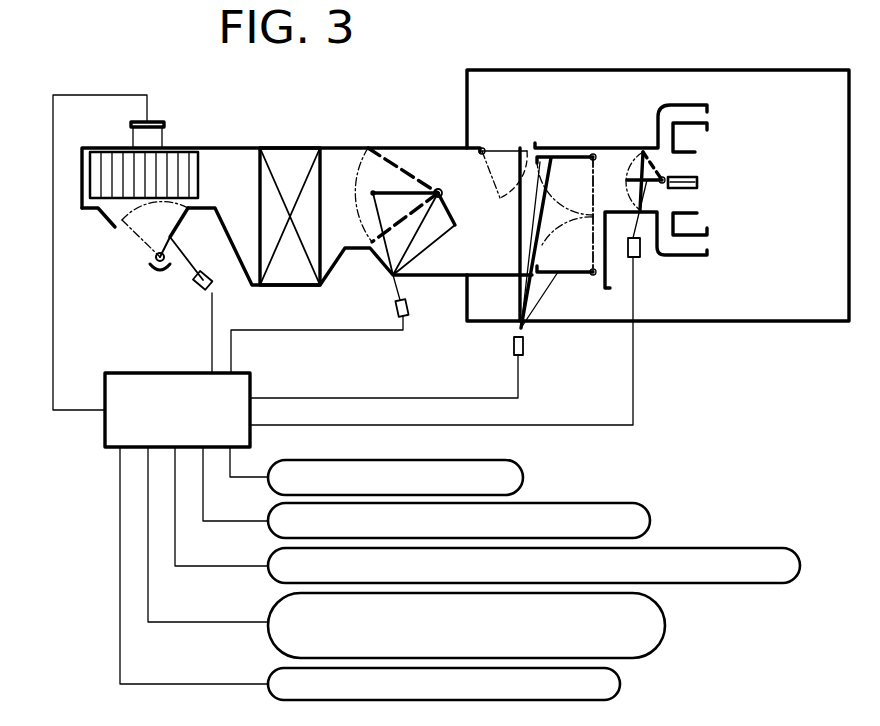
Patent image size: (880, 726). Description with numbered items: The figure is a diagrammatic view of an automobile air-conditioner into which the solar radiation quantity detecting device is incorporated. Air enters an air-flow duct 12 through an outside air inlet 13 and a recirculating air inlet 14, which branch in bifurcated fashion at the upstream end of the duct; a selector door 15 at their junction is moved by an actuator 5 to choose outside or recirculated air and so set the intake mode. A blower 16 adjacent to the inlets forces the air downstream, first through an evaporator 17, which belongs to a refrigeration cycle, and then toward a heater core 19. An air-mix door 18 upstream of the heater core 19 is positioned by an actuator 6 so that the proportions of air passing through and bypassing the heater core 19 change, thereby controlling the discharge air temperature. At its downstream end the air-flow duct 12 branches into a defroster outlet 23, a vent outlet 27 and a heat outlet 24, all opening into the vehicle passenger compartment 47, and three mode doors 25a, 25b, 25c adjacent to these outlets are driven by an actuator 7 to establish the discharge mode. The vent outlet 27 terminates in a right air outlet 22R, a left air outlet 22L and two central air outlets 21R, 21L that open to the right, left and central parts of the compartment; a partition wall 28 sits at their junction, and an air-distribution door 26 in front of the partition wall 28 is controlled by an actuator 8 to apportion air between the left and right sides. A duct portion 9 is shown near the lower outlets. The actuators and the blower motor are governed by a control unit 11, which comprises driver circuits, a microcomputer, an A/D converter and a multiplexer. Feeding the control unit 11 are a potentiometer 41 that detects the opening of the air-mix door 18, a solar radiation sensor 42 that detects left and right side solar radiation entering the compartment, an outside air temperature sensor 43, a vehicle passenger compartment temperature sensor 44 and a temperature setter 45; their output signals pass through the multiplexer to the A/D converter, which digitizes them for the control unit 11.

The actuator 5 is at (213, 283).
The actuator 6 is at (407, 307).
The actuator 7 is at (513, 346).
The actuator 8 is at (640, 250).
The lower air outlet duct 9 is at (613, 263).
The control unit 11 is at (120, 372).
The air-flow duct 12 is at (342, 148).
The outside air inlet 13 is at (133, 238).
The recirculating air inlet 14 is at (180, 230).
The selector door 15 is at (172, 243).
The blower 16 is at (118, 162).
The evaporator 17 is at (293, 278).
The air-mix door 18 is at (408, 188).
The heater core 19 is at (423, 242).
The central air outlet 21R is at (697, 163).
The central air outlet 21L is at (697, 208).
The right air outlet 22R is at (705, 113).
The left air outlet 22L is at (700, 244).
The defroster outlet 23 is at (495, 143).
The heat outlet 24 is at (562, 278).
The mode door 25a is at (507, 150).
The mode door 25b is at (577, 157).
The mode door 25c is at (582, 278).
The air-distribution door 26 is at (699, 176).
The vent outlet 27 is at (615, 163).
The partition wall 28 is at (699, 190).
The potentiometer 41 is at (525, 477).
The solar radiation sensor 42 is at (652, 522).
The outside air temperature sensor 43 is at (802, 570).
The vehicle passenger compartment temperature sensor 44 is at (667, 630).
The temperature setter 45 is at (622, 688).
The vehicle passenger compartment 47 is at (660, 68).